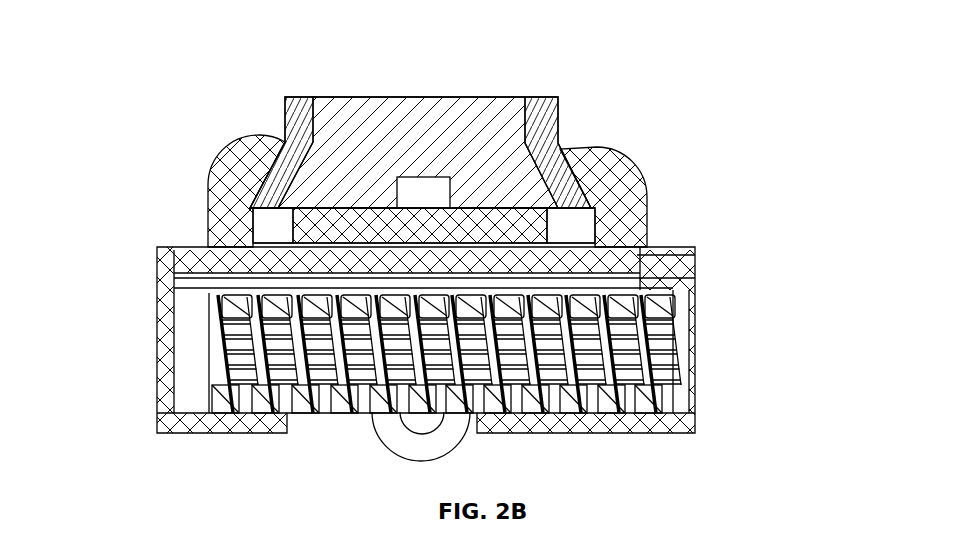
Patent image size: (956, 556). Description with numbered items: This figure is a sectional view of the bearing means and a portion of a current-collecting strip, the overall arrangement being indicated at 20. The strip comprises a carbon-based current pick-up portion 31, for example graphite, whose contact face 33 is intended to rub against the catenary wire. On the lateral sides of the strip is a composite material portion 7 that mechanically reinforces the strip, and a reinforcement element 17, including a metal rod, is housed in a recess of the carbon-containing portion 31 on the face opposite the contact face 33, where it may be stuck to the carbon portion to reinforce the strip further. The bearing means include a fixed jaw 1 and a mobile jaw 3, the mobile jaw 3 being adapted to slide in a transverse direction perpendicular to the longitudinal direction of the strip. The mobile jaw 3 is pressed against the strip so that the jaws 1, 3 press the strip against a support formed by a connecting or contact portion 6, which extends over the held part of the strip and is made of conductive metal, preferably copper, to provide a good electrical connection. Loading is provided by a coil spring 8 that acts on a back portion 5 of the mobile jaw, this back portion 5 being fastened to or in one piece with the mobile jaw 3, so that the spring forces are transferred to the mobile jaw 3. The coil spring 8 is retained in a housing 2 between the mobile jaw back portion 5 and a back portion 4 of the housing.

The connector assembly 20 is at (557, 22).
The composite material portion 7 is at (290, 97).
The current pick-up portion 31 is at (382, 112).
The contact face 33 is at (361, 100).
The reinforcement element 17 is at (560, 99).
The mobile jaw 3 is at (223, 158).
The fixed jaw 1 is at (648, 200).
The connecting or contact portion 6 is at (520, 206).
The back portion of the housing 4 is at (175, 293).
The back portion of the mobile jaw 5 is at (694, 246).
The housing 2 is at (318, 416).
The coil spring 8 is at (338, 415).